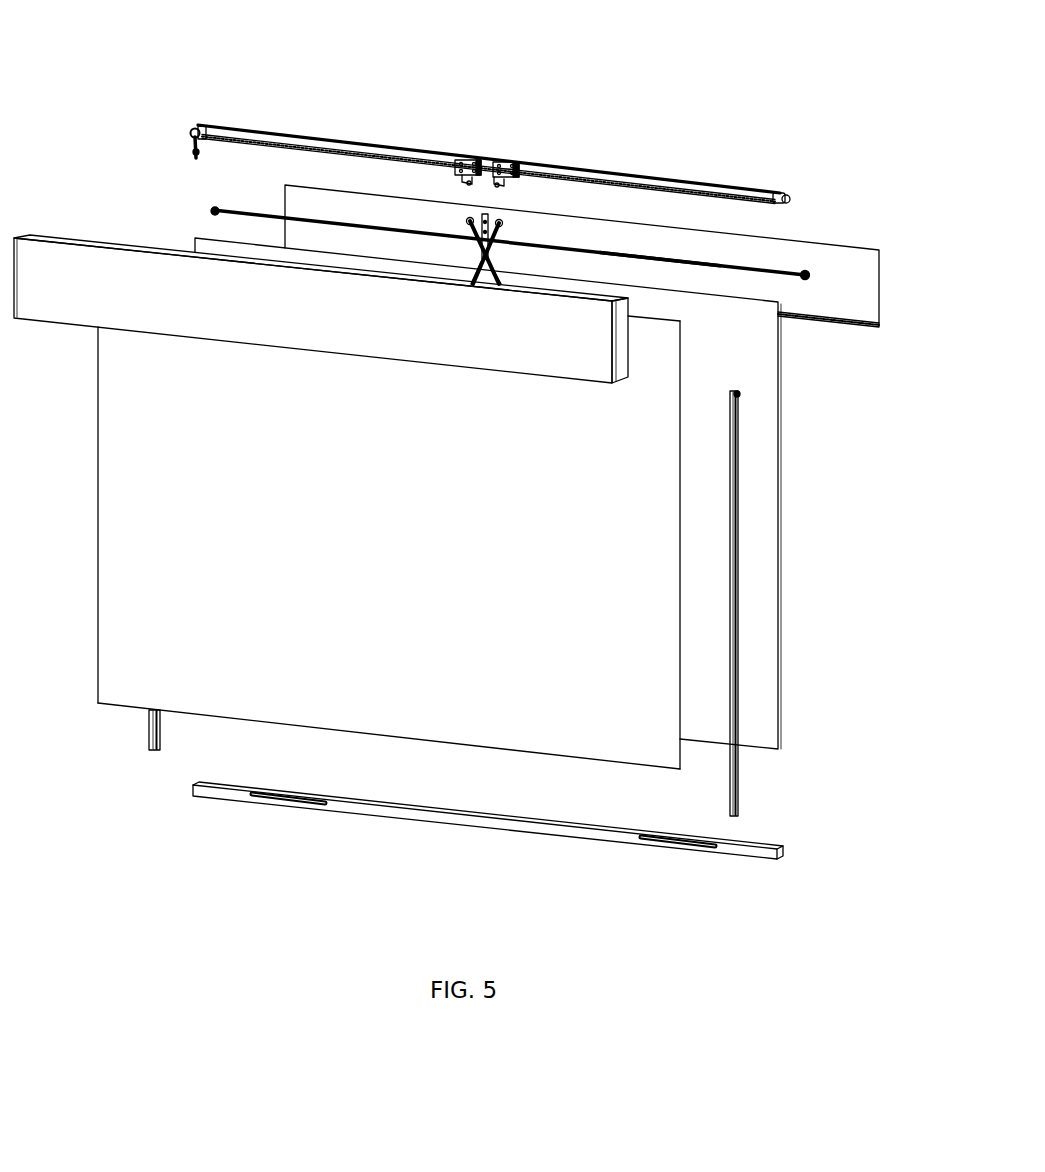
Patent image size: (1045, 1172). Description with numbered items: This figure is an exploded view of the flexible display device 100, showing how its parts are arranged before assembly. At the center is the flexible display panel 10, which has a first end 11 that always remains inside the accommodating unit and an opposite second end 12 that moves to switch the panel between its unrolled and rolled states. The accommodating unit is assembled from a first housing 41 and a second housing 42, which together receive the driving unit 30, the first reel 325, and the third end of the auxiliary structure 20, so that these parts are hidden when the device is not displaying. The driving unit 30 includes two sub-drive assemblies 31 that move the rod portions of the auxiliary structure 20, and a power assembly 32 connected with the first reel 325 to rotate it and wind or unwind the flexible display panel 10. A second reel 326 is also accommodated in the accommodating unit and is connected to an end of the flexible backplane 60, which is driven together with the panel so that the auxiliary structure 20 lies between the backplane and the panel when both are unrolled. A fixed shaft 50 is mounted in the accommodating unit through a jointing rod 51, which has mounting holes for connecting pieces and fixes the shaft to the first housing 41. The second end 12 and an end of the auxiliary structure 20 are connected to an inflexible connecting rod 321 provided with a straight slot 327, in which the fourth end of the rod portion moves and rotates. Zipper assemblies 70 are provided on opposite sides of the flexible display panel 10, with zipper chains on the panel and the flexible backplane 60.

The flexible display device 100 is at (183, 78).
The flexible display panel 10 is at (133, 492).
The first end 11 is at (668, 338).
The second end 12 is at (664, 760).
The auxiliary structure 20 is at (465, 225).
The driving unit 30 is at (178, 127).
The sub-drive assembly 31 is at (303, 125).
The power assembly 32 is at (200, 200).
The first reel 325 is at (663, 245).
The second reel 326 is at (766, 258).
The straight slot 327 is at (275, 802).
The connecting rod 321 is at (383, 808).
The first housing 41 is at (838, 265).
The second housing 42 is at (90, 306).
The fixed shaft 50 is at (492, 258).
The jointing rod 51 is at (502, 220).
The flexible backplane 60 is at (762, 472).
The zipper assembly 70 is at (750, 557).